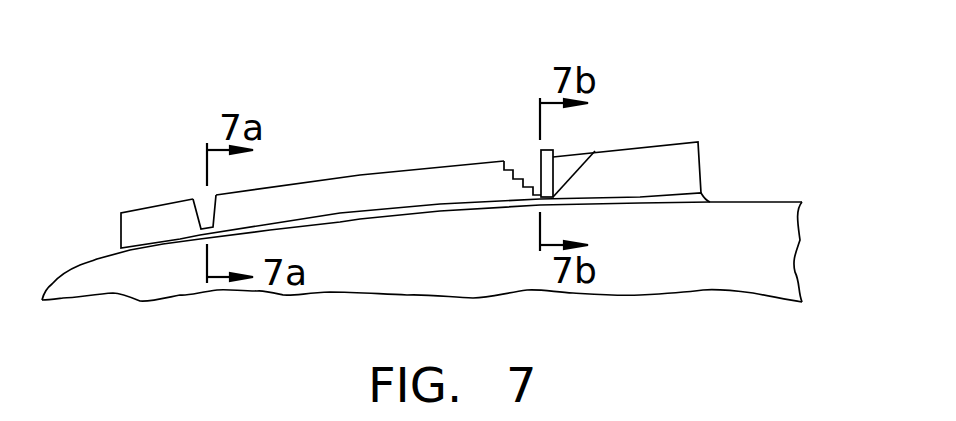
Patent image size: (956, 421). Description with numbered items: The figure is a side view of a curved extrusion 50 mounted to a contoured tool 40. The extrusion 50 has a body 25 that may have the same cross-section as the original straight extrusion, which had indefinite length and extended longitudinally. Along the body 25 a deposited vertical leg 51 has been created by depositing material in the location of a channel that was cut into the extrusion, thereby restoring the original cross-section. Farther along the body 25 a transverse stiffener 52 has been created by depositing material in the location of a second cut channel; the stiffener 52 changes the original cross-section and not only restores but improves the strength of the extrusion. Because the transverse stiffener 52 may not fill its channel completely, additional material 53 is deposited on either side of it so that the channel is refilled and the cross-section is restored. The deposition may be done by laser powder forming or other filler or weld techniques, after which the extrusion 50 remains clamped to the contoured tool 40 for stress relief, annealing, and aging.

The body 25 is at (673, 186).
The contoured tool 40 is at (735, 268).
The curved extrusion 50 is at (724, 93).
The deposited vertical leg 51 is at (215, 205).
The transverse stiffener 52 is at (553, 172).
The additional material 53 is at (527, 165).